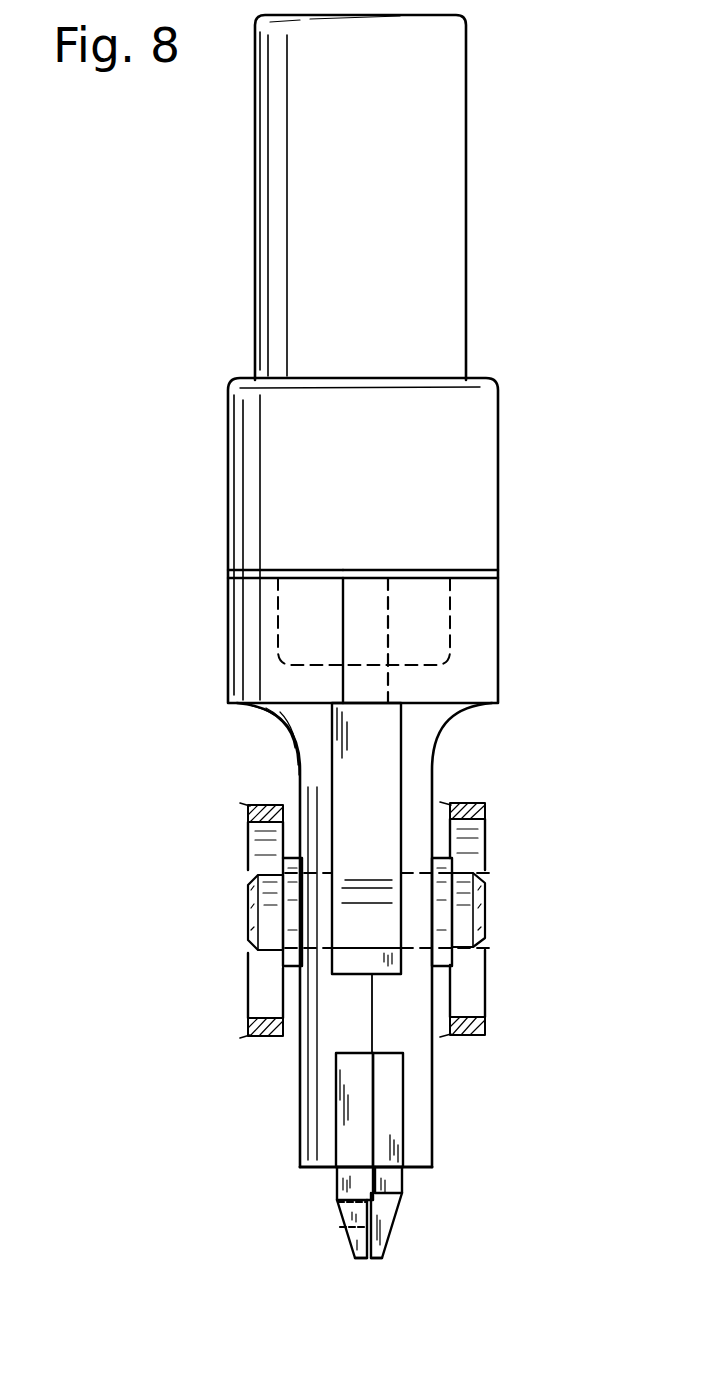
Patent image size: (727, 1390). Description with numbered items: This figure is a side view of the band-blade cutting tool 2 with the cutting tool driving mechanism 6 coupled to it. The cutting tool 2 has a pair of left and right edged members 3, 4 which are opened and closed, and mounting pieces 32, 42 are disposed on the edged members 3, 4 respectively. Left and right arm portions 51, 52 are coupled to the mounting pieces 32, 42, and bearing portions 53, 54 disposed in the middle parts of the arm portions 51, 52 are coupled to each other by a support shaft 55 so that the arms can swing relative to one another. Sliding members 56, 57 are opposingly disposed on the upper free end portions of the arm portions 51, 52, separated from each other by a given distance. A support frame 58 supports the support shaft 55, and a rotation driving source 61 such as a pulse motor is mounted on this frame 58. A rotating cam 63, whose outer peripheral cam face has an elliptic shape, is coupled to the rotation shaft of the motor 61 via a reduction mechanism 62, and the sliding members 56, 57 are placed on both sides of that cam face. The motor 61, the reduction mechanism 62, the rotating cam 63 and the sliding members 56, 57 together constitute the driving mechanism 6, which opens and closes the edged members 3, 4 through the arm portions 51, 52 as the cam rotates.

The band-blade cutting tool 2 is at (331, 1227).
The left edged member 3 is at (335, 1188).
The right edged member 4 is at (405, 1182).
The cutting tool driving mechanism 6 is at (217, 381).
The mounting piece 32 is at (337, 1115).
The mounting piece 42 is at (400, 1123).
The left arm portion 51 is at (300, 759).
The right arm portion 52 is at (435, 762).
The bearing portion 53 is at (308, 912).
The bearing portion 54 is at (422, 917).
The support shaft 55 is at (487, 887).
The sliding member 56 is at (232, 615).
The sliding member 57 is at (497, 608).
The support frame 58 is at (250, 808).
The rotation driving source 61 is at (253, 210).
The reduction mechanism 62 is at (230, 490).
The rotating cam 63 is at (280, 633).